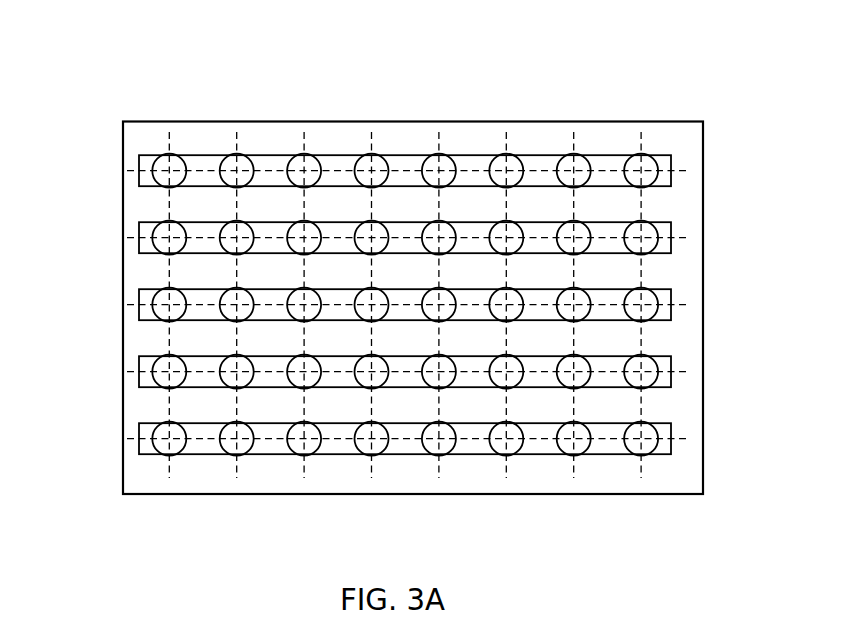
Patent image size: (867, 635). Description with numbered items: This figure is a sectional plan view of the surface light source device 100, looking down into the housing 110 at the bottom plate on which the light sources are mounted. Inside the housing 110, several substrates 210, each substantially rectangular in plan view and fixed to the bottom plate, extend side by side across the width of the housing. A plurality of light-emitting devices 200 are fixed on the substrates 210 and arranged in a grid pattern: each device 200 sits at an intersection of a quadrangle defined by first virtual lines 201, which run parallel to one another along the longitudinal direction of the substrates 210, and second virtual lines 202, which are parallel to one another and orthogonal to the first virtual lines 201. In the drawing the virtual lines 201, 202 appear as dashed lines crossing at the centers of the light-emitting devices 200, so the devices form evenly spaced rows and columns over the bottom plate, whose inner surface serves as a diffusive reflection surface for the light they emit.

The surface light source device 100 is at (729, 76).
The housing 110 is at (125, 121).
The light-emitting device 200 is at (360, 157).
The first virtual line 201 is at (203, 237).
The second virtual line 202 is at (168, 205).
The substrate 210 is at (145, 176).